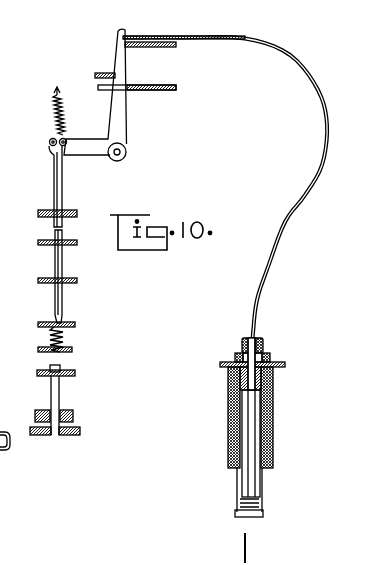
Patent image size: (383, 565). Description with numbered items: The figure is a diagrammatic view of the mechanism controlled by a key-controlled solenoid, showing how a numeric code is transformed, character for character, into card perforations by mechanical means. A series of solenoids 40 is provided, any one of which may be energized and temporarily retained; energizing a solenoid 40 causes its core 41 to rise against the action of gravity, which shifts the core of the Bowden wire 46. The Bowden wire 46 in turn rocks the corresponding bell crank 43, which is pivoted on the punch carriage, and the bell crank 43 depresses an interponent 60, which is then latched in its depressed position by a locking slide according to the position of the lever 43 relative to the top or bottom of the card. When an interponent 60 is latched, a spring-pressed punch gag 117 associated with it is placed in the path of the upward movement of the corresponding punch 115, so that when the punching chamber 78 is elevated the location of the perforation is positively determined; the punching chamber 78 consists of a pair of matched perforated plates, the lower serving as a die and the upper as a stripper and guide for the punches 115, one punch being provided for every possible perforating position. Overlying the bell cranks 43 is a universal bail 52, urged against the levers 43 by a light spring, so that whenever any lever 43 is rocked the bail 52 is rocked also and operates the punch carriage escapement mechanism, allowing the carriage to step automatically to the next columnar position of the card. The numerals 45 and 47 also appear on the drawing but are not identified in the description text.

The solenoid 40 is at (273, 410).
The core 41 is at (250, 483).
The bell crank 43 is at (124, 108).
The rod 45 is at (43, 210).
The Bowden wire 46 is at (300, 195).
The clamp bar 47 is at (143, 37).
The universal bail 52 is at (105, 73).
The interponent 60 is at (63, 262).
The punching chamber 78 is at (63, 433).
The punch 115 is at (56, 390).
The punch gag 117 is at (60, 320).